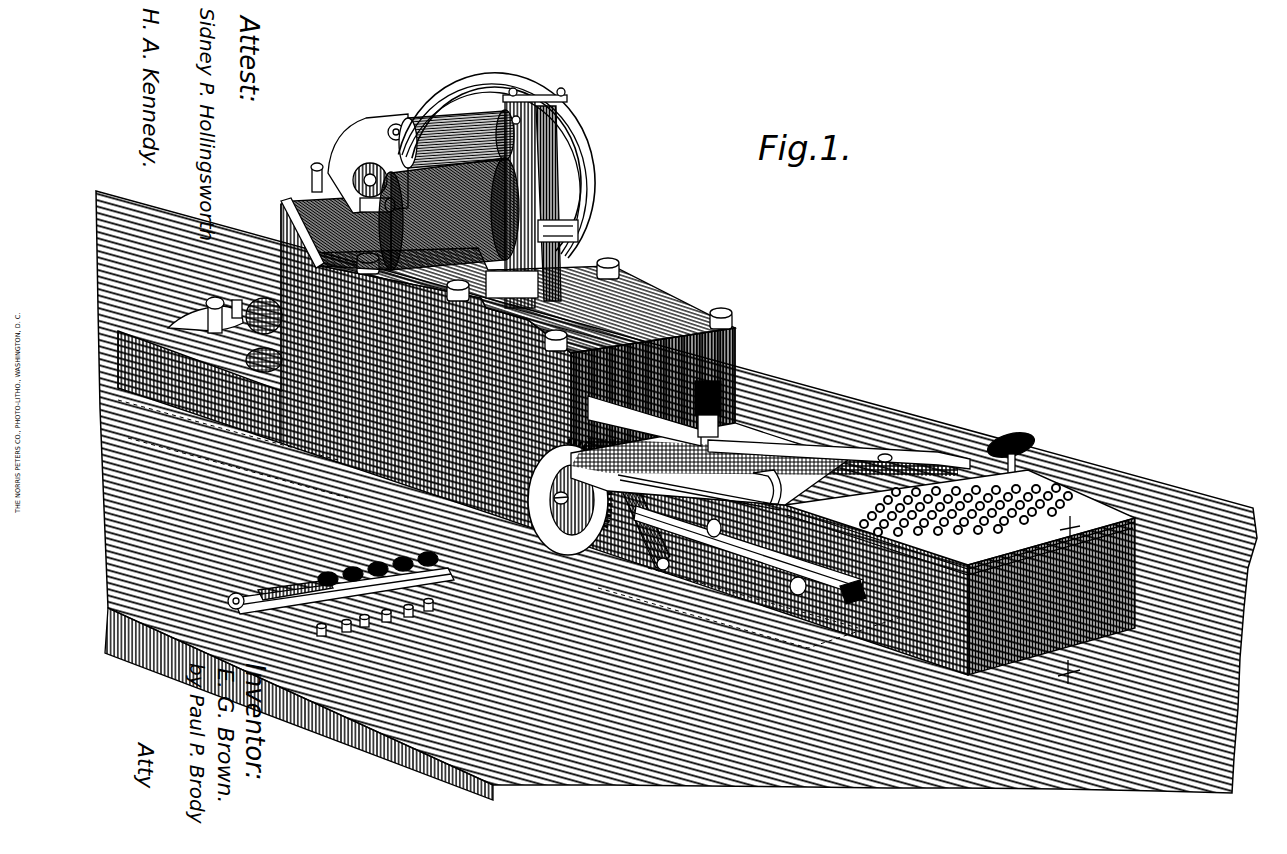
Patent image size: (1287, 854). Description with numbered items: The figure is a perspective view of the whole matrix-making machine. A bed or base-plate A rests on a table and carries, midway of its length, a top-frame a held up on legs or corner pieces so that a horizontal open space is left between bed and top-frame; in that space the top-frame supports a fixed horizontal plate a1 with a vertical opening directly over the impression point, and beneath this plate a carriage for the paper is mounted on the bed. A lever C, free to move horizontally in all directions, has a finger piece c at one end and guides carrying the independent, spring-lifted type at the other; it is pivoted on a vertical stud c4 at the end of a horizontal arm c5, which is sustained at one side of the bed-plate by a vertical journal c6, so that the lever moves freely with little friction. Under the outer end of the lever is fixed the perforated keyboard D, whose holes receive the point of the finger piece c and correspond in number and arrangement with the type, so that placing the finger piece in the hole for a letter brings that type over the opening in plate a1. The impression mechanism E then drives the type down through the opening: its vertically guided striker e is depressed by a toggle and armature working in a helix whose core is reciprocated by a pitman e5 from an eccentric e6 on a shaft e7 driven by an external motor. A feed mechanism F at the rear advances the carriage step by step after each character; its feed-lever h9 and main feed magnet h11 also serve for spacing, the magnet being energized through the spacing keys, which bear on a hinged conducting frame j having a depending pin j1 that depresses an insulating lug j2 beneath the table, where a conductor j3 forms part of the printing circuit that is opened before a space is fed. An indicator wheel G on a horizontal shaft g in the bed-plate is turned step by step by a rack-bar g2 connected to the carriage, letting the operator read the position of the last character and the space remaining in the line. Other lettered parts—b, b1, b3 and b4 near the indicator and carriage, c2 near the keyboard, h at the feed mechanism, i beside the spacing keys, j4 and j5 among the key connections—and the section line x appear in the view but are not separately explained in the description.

The bed or base-plate A is at (205, 362).
The top-frame a is at (521, 300).
The fixed horizontal plate a1 is at (659, 402).
The belt / driving connection b is at (604, 505).
The rod b1 is at (677, 536).
The connecting rod b3 is at (750, 555).
The rod end b4 is at (795, 556).
The lever C is at (1026, 440).
The finger piece c is at (654, 413).
The key c2 is at (976, 476).
The vertical stud c4 is at (726, 430).
The horizontal arm c5 is at (820, 432).
The vertical journal c6 is at (872, 432).
The perforated plate or keyboard D is at (960, 572).
The impression mechanism E is at (487, 190).
The striker e is at (413, 168).
The pitman e5 is at (393, 125).
The eccentric e6 is at (362, 155).
The shaft e7 is at (276, 200).
The feed mechanism F is at (228, 296).
The indicator wheel G is at (569, 498).
The horizontal shaft g is at (763, 484).
The rack-bar g2 is at (699, 492).
The magnet h is at (250, 371).
The feed-lever h9 is at (240, 292).
The feed magnet h11 is at (256, 292).
The key levers i is at (384, 548).
The hinged conducting loop or frame j is at (272, 612).
The depending pin j1 is at (329, 642).
The insulating head or lug j2 is at (359, 636).
The conductor j3 is at (381, 630).
The key j4 is at (409, 624).
The key j5 is at (429, 617).
The section line x is at (1069, 603).